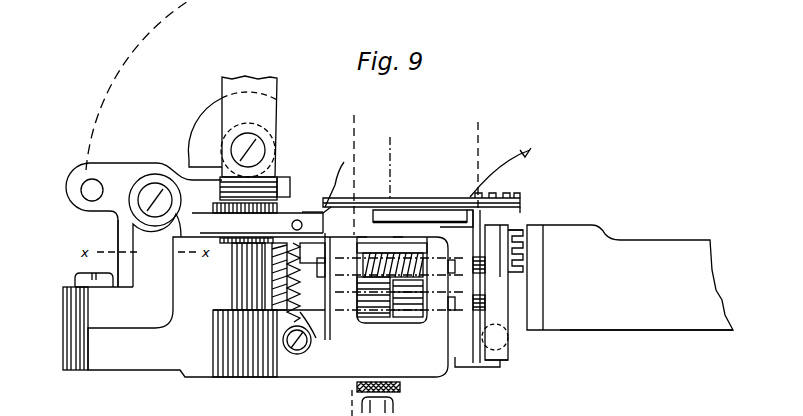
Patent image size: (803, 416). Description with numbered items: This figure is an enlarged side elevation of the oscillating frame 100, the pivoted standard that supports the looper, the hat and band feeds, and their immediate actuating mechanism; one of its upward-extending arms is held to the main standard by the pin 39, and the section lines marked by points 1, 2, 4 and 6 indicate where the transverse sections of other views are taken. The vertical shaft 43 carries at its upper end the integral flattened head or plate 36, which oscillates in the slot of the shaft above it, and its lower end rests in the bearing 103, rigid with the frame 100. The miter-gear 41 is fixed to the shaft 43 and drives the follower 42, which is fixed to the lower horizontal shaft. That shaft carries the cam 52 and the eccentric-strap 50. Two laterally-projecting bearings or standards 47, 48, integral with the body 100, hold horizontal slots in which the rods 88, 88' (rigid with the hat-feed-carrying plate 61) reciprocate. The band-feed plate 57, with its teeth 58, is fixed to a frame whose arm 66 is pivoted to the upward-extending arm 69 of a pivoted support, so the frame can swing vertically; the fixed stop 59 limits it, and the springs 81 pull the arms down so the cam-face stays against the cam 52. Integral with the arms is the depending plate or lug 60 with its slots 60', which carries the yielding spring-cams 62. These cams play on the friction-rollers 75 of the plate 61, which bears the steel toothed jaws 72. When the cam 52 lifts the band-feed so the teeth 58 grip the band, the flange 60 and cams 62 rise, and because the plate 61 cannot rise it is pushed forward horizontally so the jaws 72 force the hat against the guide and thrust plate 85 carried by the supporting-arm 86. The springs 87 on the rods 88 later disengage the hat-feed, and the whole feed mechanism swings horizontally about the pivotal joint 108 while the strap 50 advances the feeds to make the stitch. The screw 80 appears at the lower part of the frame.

The section line 1 2 1 is at (478, 158).
The section line 1 2 is at (338, 178).
The section line 3 4 is at (389, 159).
The section line 5 6 is at (353, 165).
The flattened head or plate 36 is at (196, 130).
The pin 39 is at (268, 150).
The miter-gear 41 is at (228, 276).
The follower 42 is at (272, 290).
The shaft 43 is at (232, 279).
The laterally-projecting bearing or standard 47 is at (433, 323).
The laterally-projecting bearing or standard 48 is at (344, 323).
The eccentric-strap 50 is at (393, 258).
The cam 52 is at (418, 249).
The band-feed plate 57 is at (520, 213).
The teeth 58 is at (520, 197).
The fixed stop 59 is at (430, 208).
The depending plate flange or lug 60 is at (473, 296).
The post foot 60' is at (513, 378).
The plate 61 is at (497, 297).
The spring-cams 62 is at (477, 337).
The arm of feed-plate-supporting frame 66 is at (302, 212).
The upward-extending arm 69 is at (141, 253).
The toothed jaws 72 is at (520, 227).
The friction-rollers 75 is at (507, 340).
The screw 80 is at (297, 354).
The springs 81 is at (315, 333).
The guide and thrust plate 85 is at (533, 328).
The supporting-arm 86 is at (610, 328).
The springs 87 is at (400, 233).
The rods 88 is at (335, 205).
The pin 88' is at (370, 206).
The frame 100 is at (143, 358).
The bearing 103 is at (243, 370).
The pivotal joint 108 is at (63, 344).